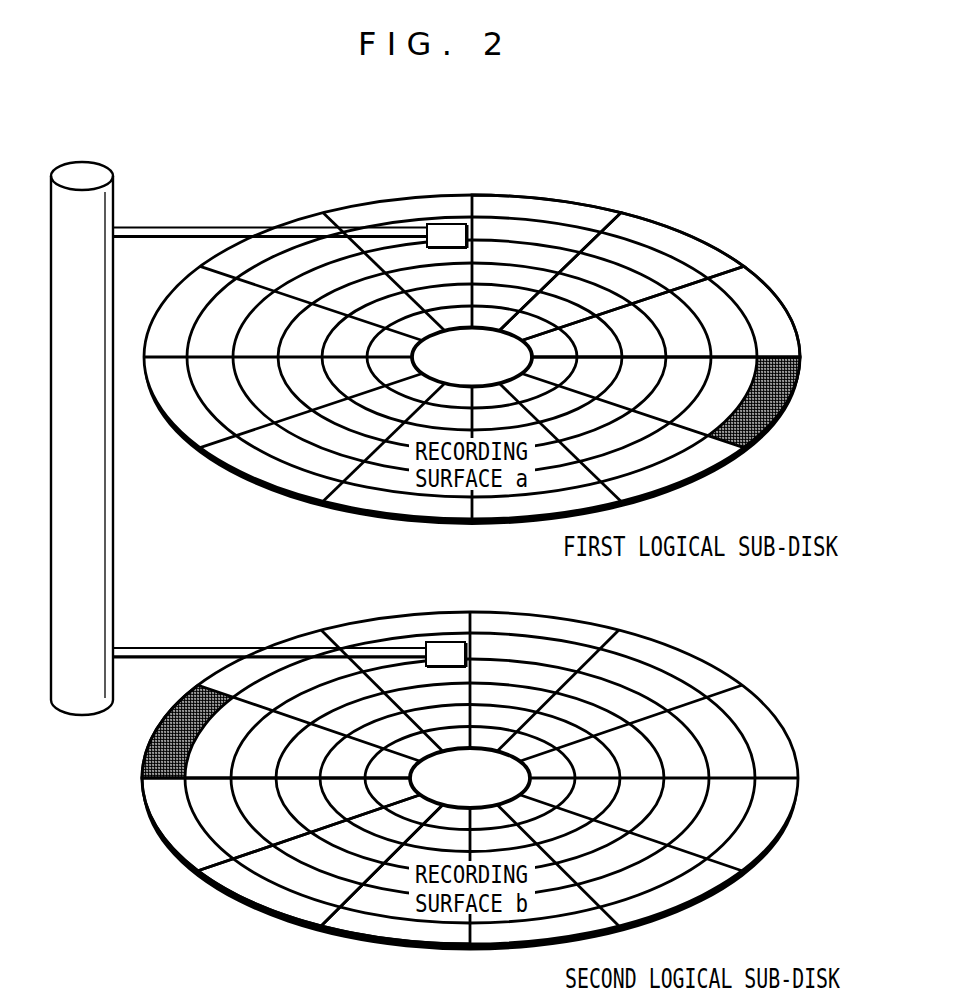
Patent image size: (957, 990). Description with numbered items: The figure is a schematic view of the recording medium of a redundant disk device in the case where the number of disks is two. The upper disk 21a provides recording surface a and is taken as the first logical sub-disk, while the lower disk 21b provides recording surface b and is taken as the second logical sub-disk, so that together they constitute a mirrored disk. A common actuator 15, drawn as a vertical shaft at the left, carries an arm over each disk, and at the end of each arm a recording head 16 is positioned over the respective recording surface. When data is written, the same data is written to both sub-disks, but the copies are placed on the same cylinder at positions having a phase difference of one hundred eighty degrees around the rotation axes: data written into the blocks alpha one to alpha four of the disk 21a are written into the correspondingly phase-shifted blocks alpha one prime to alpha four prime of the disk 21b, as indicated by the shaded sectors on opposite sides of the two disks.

The actuator 15 is at (92, 175).
The recording head 16 is at (452, 230).
The disk 21a is at (303, 215).
The disk 21b is at (300, 632).